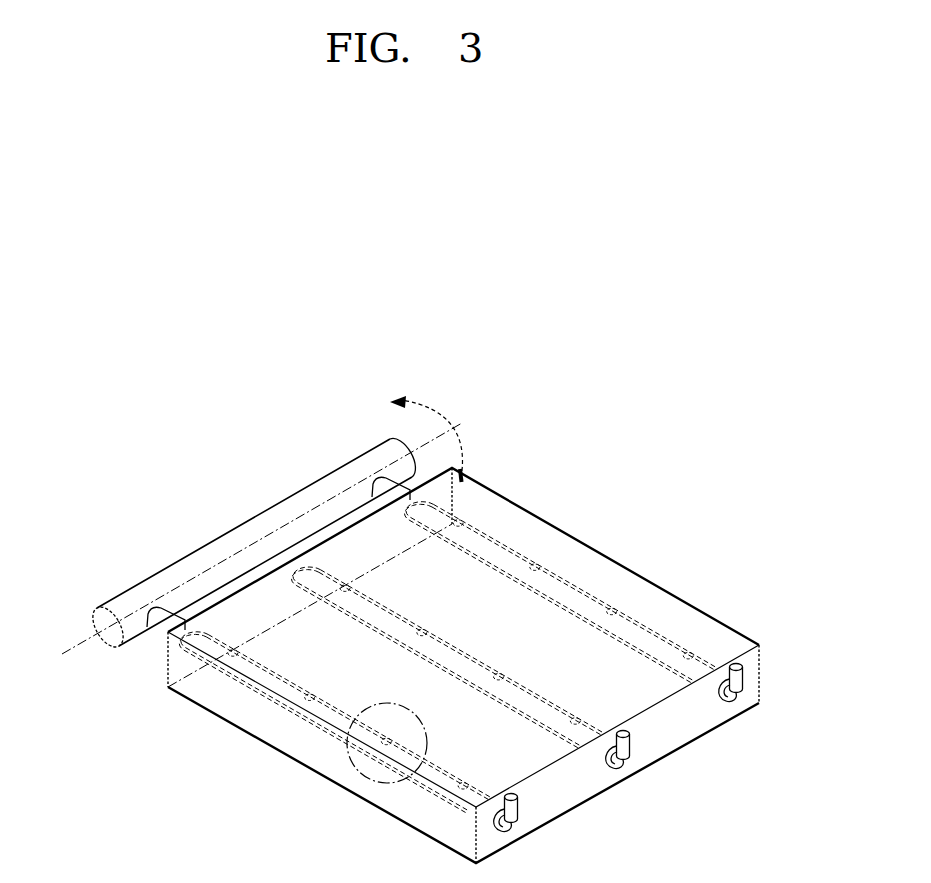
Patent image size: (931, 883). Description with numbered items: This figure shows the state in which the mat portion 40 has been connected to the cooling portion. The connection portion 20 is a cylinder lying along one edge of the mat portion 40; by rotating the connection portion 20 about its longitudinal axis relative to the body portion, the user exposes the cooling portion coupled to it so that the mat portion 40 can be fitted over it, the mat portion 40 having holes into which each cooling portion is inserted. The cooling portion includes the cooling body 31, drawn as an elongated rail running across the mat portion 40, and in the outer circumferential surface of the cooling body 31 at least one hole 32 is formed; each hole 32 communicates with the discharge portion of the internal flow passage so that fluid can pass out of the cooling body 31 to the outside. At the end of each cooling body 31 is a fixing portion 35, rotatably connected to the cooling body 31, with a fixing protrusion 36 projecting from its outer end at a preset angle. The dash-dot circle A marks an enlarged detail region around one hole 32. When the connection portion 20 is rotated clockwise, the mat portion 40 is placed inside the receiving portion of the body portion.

The connection portion 20 is at (301, 503).
The mat portion 40 is at (520, 521).
The cooling body 31 is at (662, 637).
The hole 32 is at (613, 609).
The fixing protrusion 36 is at (736, 664).
The fixing portion 35 is at (745, 682).
The detail region A is at (362, 779).